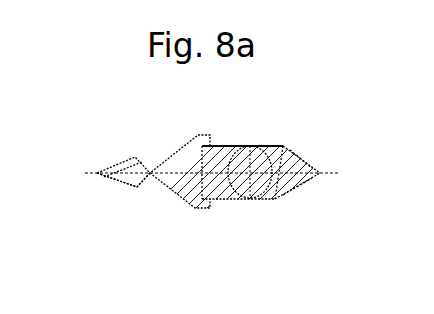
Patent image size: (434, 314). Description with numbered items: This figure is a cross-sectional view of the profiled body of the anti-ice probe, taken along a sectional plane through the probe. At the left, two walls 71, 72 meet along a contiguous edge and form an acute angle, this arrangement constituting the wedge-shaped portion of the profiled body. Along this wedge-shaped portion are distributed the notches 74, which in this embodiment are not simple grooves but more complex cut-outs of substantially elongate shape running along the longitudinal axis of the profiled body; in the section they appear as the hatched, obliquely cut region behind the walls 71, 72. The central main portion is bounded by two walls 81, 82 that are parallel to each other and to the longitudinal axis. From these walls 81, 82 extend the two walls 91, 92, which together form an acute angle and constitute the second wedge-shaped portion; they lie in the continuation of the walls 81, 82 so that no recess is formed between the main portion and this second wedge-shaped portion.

The wall 71 is at (118, 167).
The wall 72 is at (117, 181).
The notch 74 is at (167, 151).
The wall 81 is at (232, 146).
The wall 82 is at (240, 199).
The wall 91 is at (297, 158).
The wall 92 is at (296, 190).